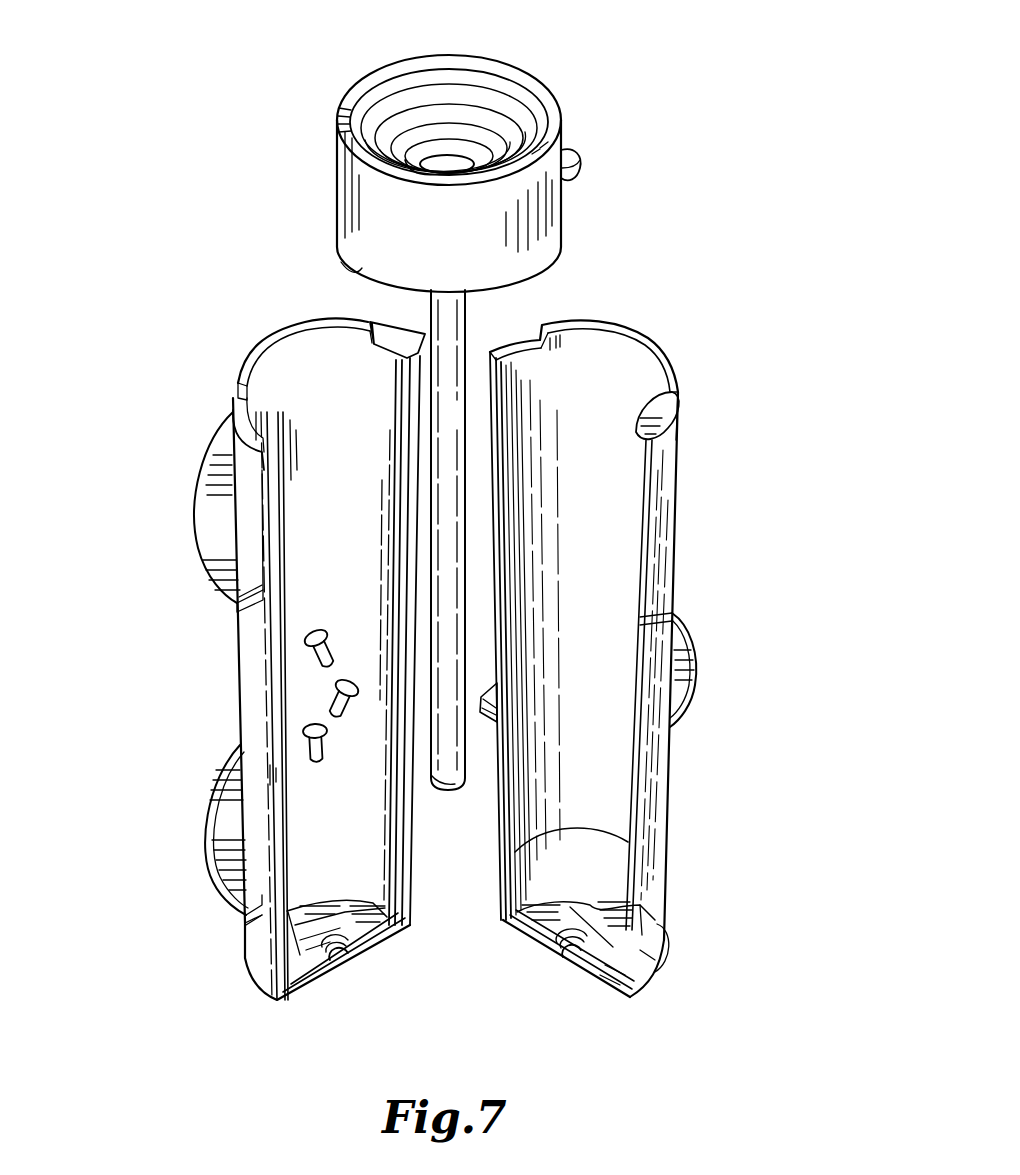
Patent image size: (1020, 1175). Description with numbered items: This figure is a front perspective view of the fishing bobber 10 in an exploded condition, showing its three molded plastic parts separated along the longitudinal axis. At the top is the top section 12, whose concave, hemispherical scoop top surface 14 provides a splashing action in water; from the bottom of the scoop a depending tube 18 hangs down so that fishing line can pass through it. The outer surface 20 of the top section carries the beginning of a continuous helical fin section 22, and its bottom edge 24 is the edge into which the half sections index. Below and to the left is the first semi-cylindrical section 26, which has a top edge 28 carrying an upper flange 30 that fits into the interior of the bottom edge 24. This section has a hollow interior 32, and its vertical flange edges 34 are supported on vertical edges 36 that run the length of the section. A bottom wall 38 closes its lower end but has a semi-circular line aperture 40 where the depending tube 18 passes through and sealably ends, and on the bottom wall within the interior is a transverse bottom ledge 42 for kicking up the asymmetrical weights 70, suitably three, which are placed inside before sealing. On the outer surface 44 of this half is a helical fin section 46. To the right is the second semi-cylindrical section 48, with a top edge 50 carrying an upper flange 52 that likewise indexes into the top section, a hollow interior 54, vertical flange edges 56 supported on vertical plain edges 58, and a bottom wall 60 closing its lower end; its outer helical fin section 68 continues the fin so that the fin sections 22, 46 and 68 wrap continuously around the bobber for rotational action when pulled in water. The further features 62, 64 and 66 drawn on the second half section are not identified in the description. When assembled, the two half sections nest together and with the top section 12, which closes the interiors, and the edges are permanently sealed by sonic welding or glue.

The fishing bobber 10 is at (334, 88).
The top section 12 is at (553, 90).
The scoop top surface 14 is at (452, 95).
The depending tube 18 is at (472, 300).
The outer surface 20 is at (536, 232).
The helical fin section 22 is at (575, 160).
The bottom edge 24 is at (344, 264).
The first semi-cylindrical section 26 is at (235, 680).
The top edge 28 is at (262, 416).
The upper flange 30 is at (288, 330).
The hollow interior 32 is at (307, 676).
The vertical flange edges 34 is at (407, 900).
The vertical edges 36 is at (258, 476).
The bottom wall 38 is at (307, 984).
The semi-circular line aperture 40 is at (342, 964).
The transverse bottom ledge 42 is at (320, 925).
The outer surface 44 is at (240, 614).
The helical fin section 46 is at (226, 810).
The second semi-cylindrical section 48 is at (668, 556).
The top edge 50 is at (678, 432).
The upper flange 52 is at (617, 320).
The hollow interior 54 is at (582, 728).
The vertical flange edges 56 is at (642, 418).
The vertical plain edges 58 is at (515, 852).
The bottom wall 60 is at (622, 975).
The drain hole 62 is at (568, 960).
The bottom surface 64 is at (610, 915).
The inner wall 66 is at (650, 788).
The helical fin section 68 is at (688, 640).
The asymmetrical weights 70 is at (310, 758).